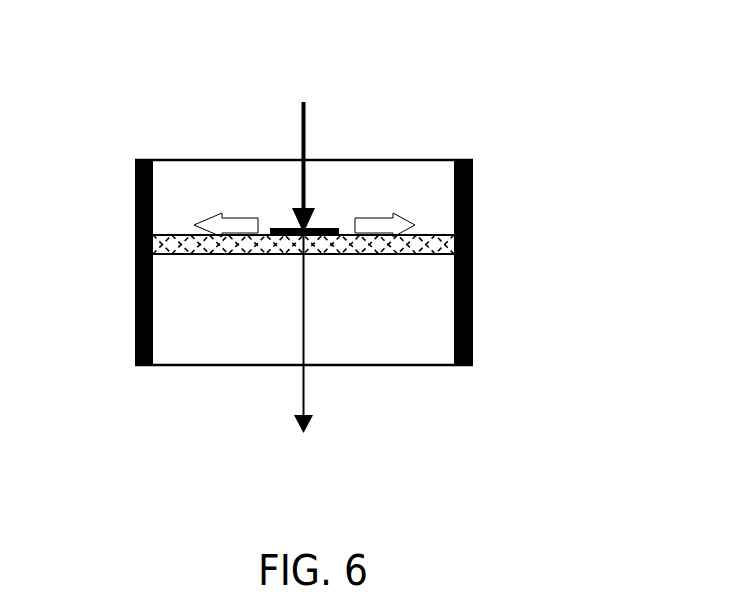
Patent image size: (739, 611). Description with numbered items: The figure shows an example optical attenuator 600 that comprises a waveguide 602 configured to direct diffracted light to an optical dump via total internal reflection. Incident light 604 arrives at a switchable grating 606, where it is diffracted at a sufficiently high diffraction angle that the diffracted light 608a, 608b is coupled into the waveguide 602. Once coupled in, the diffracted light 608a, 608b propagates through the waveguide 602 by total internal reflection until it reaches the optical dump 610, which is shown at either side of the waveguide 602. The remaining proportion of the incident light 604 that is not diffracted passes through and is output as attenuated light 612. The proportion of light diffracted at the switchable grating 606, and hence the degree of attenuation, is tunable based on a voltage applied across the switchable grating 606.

The optical attenuator 600 is at (545, 65).
The waveguide 602 is at (340, 255).
The incident light 604 is at (306, 120).
The switchable grating 606 is at (329, 228).
The diffracted light 608a is at (178, 232).
The diffracted light 608b is at (424, 232).
The optical dump 610 is at (135, 258).
The attenuated light 612 is at (305, 402).